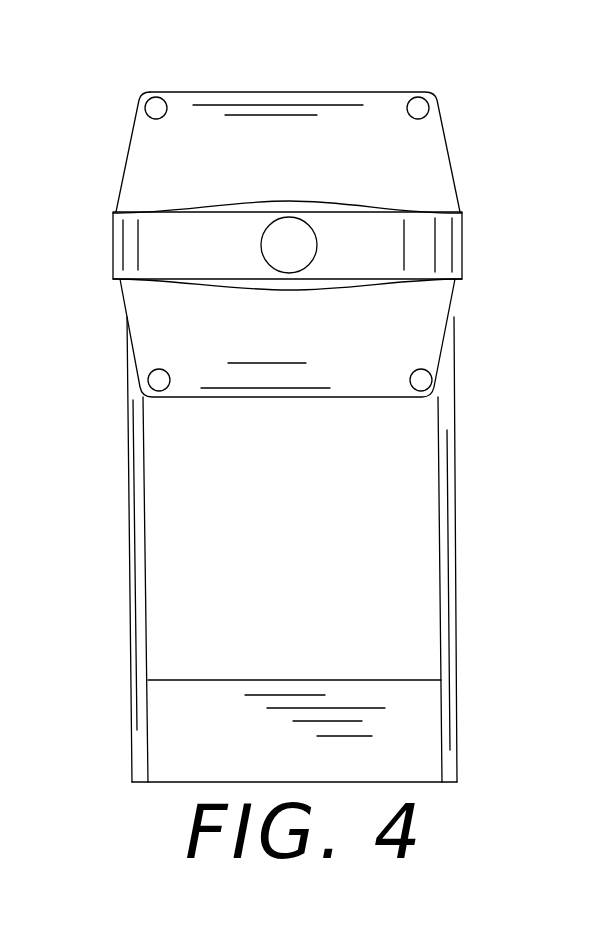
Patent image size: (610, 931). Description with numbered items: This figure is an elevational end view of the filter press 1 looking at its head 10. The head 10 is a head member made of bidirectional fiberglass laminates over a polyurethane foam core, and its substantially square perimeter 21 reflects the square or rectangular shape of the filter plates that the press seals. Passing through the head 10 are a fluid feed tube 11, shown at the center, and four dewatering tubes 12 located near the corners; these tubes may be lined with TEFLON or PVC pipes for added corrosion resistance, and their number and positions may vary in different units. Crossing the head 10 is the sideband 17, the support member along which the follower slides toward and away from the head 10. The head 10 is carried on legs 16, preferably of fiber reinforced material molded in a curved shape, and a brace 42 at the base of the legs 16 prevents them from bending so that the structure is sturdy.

The filter press 1 is at (88, 91).
The head 10 is at (275, 352).
The fluid feed tube 11 is at (273, 245).
The dewatering tubes 12 is at (156, 108).
The legs 16 is at (437, 580).
The sideband 17 is at (433, 247).
The perimeter 21 is at (298, 93).
The brace 42 is at (186, 742).